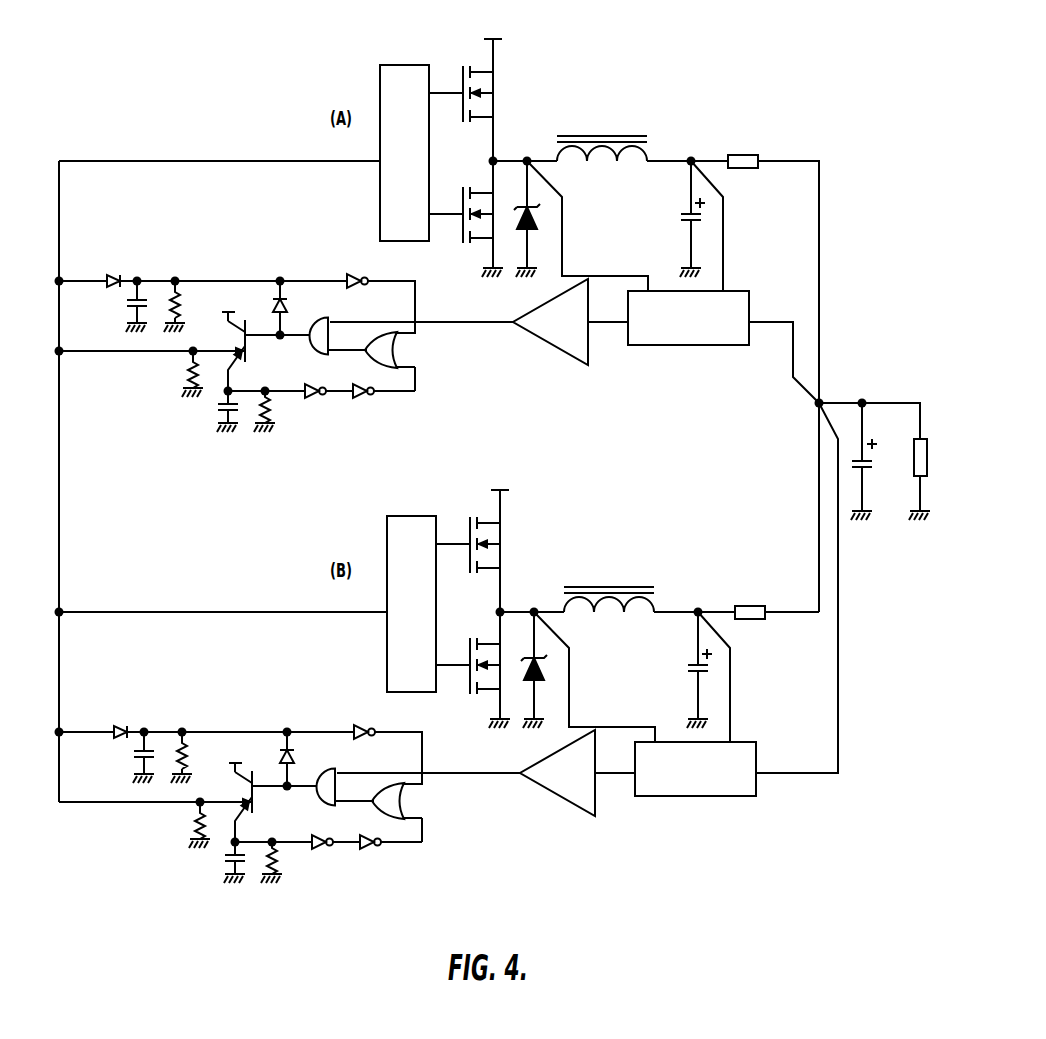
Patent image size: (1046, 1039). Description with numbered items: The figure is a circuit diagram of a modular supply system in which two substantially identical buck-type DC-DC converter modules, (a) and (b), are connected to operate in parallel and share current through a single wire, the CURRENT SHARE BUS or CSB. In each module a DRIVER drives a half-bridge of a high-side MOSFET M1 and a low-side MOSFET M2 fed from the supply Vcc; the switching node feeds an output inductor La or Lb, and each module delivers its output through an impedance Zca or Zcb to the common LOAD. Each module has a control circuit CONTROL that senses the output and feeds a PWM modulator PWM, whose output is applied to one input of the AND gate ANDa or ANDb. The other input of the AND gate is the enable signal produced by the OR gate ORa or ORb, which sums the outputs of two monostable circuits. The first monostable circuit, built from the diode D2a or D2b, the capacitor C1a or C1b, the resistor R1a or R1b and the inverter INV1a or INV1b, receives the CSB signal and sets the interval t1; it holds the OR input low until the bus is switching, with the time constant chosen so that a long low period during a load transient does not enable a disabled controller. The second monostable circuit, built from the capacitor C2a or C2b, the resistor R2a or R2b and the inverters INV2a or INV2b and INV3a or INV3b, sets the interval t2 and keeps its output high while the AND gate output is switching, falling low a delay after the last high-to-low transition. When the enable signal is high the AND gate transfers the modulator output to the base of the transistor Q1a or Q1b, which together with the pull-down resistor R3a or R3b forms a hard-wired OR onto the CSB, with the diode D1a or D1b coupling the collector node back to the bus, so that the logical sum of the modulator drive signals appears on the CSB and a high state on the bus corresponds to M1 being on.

The current share bus CSB is at (221, 481).
The driver DRIVER is at (408, 378).
The MOSFET M1 is at (464, 301).
The MOSFET M2 is at (464, 421).
The supply voltage Vcc is at (362, 387).
The output inductor of converter (a) La is at (602, 133).
The output inductor of converter (b) Lb is at (609, 584).
The output impedance of converter (a) Zca is at (743, 143).
The output impedance of converter (b) Zcb is at (750, 594).
The control circuit CONTROL is at (692, 543).
The PWM modulator PWM is at (554, 547).
The load LOAD is at (874, 460).
The diode D2a is at (109, 267).
The diode D2b is at (116, 718).
The interval t1 is at (151, 488).
The interval t2 is at (243, 651).
The capacitor C1a is at (121, 306).
The capacitor C1b is at (128, 757).
The resistor R1a is at (188, 305).
The resistor R1b is at (195, 756).
The diode D1a is at (266, 308).
The diode D1b is at (273, 759).
The inverter INV1a is at (350, 267).
The inverter INV1b is at (357, 718).
The AND gate ANDa is at (323, 323).
The AND gate ANDb is at (330, 774).
The OR gate ORa is at (367, 347).
The OR gate ORb is at (374, 798).
The transistor Q1a is at (166, 351).
The transistor Q1b is at (173, 802).
The pull-down resistor R3a is at (178, 372).
The pull-down resistor R3b is at (185, 823).
The capacitor C2a is at (211, 411).
The capacitor C2b is at (218, 862).
The resistor R2a is at (275, 398).
The resistor R2b is at (282, 849).
The inverter INV2a is at (310, 403).
The inverter INV2b is at (317, 854).
The inverter INV3a is at (367, 403).
The inverter INV3b is at (374, 854).